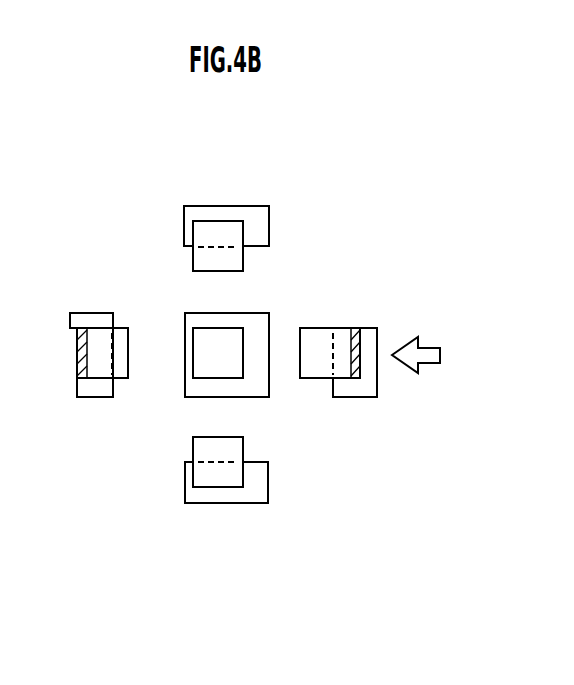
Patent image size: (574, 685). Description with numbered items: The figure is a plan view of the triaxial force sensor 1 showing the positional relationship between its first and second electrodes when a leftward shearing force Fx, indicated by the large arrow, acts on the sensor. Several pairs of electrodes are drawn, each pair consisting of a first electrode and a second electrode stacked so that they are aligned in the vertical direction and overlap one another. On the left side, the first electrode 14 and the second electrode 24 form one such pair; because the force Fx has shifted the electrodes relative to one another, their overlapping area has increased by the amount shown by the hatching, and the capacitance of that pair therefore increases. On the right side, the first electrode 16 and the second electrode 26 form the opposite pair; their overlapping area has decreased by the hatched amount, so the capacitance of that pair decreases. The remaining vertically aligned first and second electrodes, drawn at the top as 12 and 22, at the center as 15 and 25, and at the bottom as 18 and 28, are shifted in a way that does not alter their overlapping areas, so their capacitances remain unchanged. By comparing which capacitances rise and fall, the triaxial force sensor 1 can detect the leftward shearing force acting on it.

The triaxial force sensor 1 is at (352, 180).
The first elastic member 12 is at (210, 206).
The first magnet 22 is at (232, 221).
The first electrode 14 is at (80, 313).
The second electrode 24 is at (98, 328).
The housing frame 15 is at (255, 313).
The movable mass 25 is at (207, 380).
The first electrode 16 is at (358, 313).
The second electrode 26 is at (322, 328).
The fourth elastic member 18 is at (210, 503).
The fourth magnet 28 is at (232, 487).